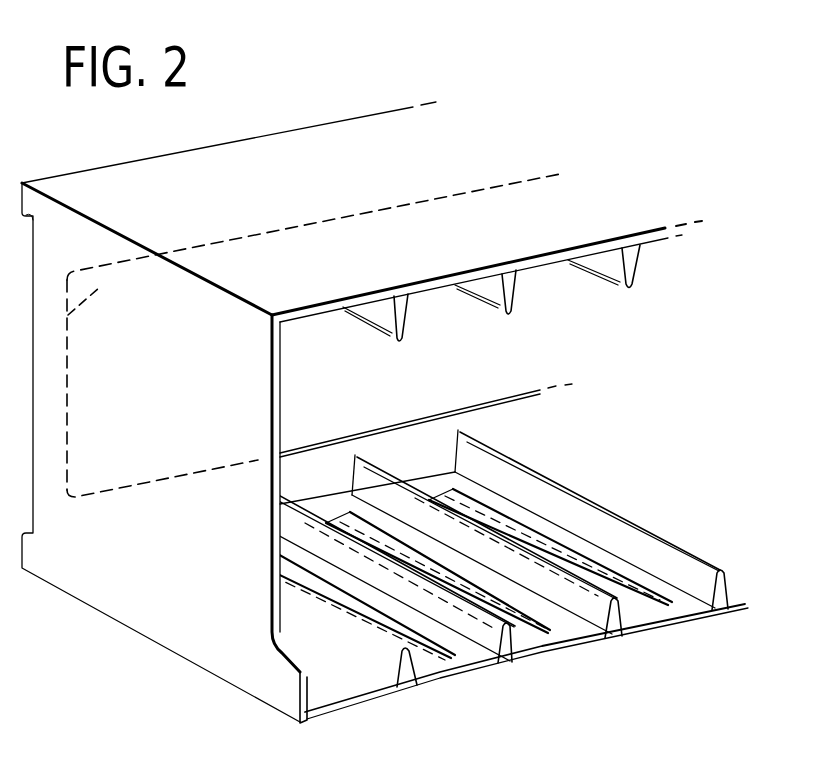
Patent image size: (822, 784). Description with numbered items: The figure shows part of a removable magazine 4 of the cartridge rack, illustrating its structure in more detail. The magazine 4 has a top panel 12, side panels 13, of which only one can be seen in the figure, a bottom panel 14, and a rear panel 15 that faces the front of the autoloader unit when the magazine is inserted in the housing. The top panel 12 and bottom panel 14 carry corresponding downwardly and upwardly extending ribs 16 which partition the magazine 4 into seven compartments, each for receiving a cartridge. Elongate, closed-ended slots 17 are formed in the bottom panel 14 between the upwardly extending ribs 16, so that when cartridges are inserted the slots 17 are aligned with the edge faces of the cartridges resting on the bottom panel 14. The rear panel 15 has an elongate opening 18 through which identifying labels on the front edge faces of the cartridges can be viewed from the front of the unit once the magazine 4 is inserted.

The removable magazine 4 is at (150, 690).
The top panel 12 is at (298, 147).
The side panel 13 is at (110, 592).
The bottom panel 14 is at (619, 640).
The rear panel 15 is at (395, 443).
The ribs 16 is at (503, 313).
The slots 17 is at (612, 577).
The elongate opening 18 is at (107, 280).